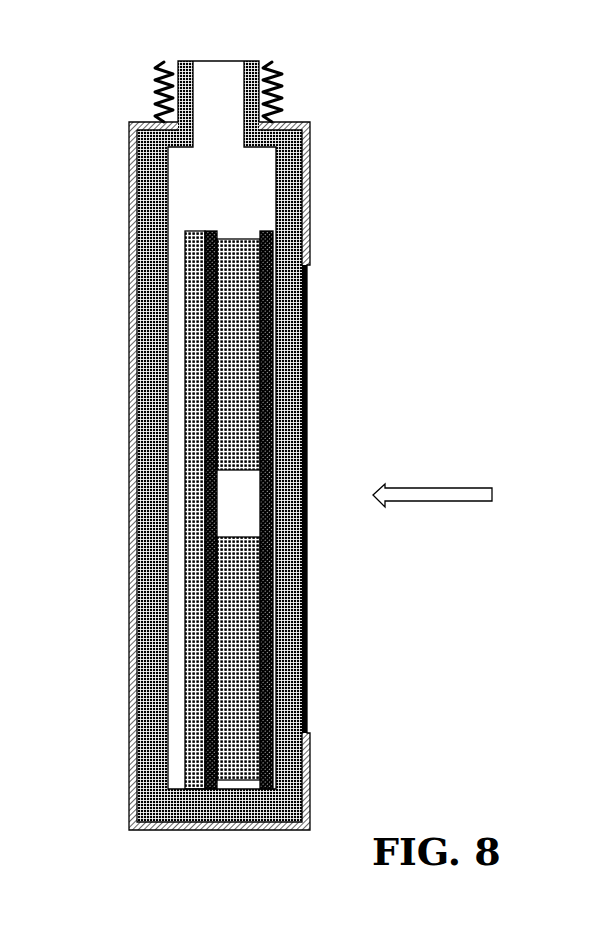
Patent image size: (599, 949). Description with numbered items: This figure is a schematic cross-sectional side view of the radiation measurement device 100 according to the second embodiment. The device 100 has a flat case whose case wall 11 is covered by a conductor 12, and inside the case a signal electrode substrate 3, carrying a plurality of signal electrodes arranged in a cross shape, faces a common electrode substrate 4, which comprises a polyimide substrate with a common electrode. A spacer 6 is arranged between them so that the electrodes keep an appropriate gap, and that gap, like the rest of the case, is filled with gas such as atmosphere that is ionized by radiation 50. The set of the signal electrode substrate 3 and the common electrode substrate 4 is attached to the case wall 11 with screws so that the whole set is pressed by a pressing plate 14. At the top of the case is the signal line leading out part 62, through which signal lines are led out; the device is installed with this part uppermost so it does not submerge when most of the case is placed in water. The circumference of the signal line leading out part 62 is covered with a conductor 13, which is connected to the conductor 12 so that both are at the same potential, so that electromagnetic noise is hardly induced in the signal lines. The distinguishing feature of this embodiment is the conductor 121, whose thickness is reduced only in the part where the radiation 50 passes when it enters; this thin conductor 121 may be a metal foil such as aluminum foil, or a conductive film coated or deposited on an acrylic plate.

The radiation measurement device 100 is at (95, 84).
The case wall 11 is at (284, 180).
The conductor 12 is at (310, 230).
The thin conductor 121 is at (307, 305).
The signal line leading out part 62 is at (262, 57).
The conductor 13 is at (282, 78).
The pressing plate 14 is at (188, 270).
The signal electrode substrate 3 is at (210, 373).
The common electrode substrate 4 is at (265, 430).
The spacer 6 is at (240, 386).
The radiation 50 is at (433, 488).